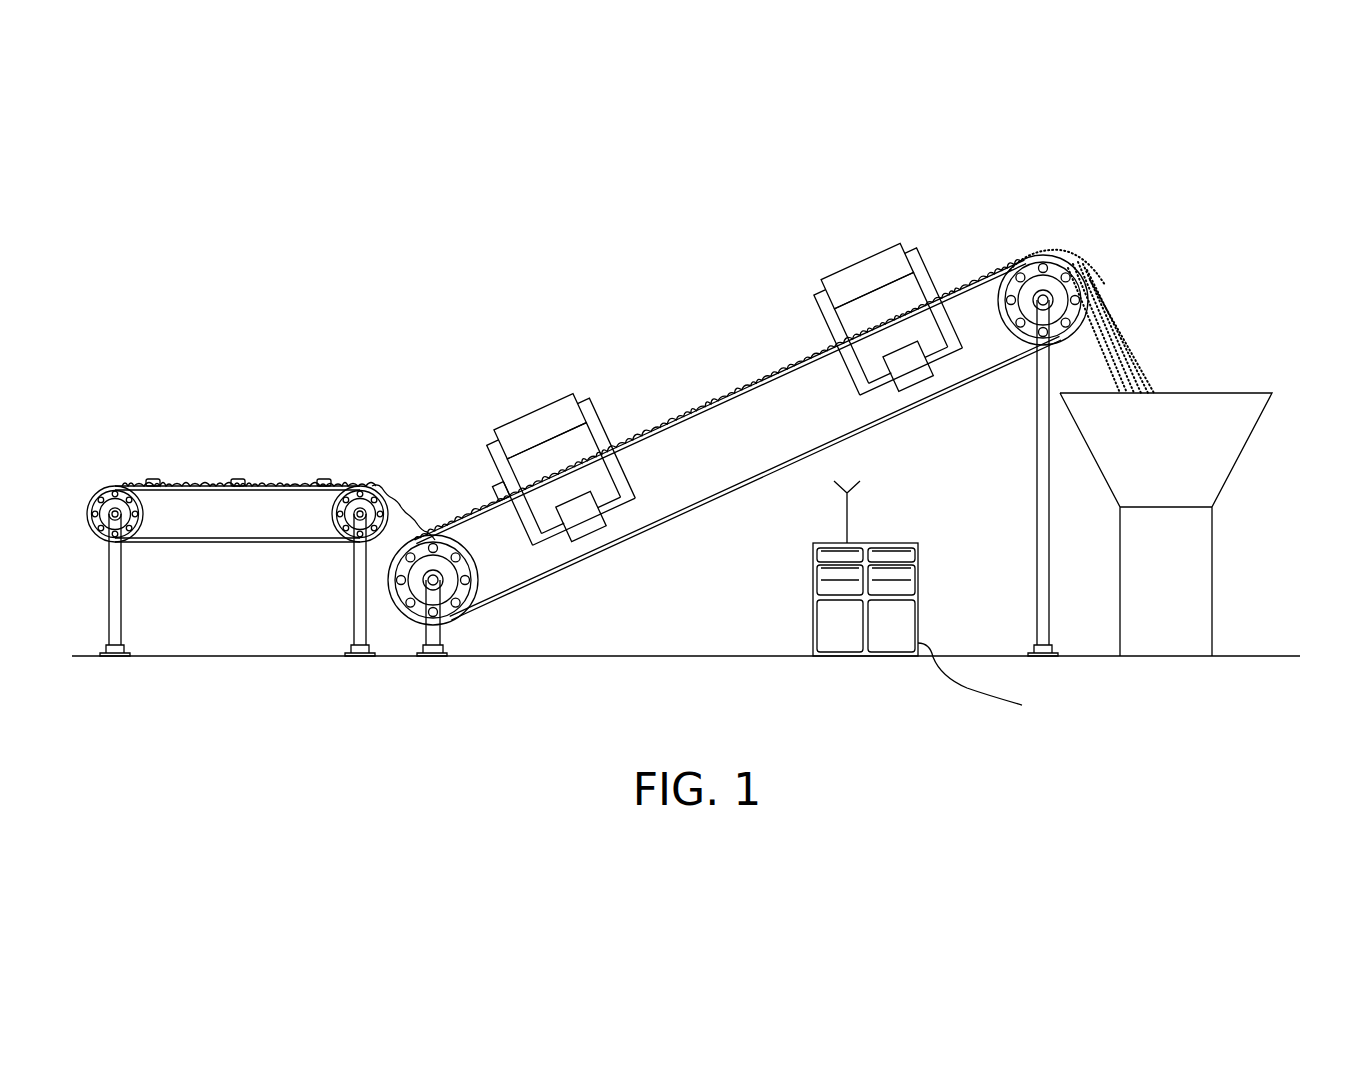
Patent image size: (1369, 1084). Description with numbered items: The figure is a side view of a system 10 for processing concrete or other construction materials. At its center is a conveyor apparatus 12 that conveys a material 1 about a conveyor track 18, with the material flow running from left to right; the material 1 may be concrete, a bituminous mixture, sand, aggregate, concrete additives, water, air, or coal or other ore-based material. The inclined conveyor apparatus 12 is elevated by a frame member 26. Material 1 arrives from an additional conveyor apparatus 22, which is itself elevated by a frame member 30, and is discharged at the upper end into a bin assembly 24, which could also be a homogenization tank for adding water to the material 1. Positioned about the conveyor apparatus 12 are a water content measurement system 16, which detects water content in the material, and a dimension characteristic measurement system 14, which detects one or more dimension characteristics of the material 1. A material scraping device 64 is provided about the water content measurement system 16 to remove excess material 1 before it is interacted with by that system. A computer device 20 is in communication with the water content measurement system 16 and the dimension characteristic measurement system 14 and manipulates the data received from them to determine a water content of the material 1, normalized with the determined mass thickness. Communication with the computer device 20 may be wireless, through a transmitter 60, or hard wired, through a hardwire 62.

The material 1 is at (287, 480).
The system 10 is at (612, 257).
The conveyor apparatus 12 is at (657, 383).
The dimension characteristic measurement system 14 is at (855, 250).
The water content measurement system 16 is at (535, 402).
The conveyor track 18 is at (750, 390).
The computer device 20 is at (823, 642).
The additional conveyor apparatus 22 is at (150, 470).
The bin assembly 24 is at (1227, 393).
The frame member 26 is at (440, 633).
The frame member 30 is at (123, 613).
The transmitter 60 is at (850, 513).
The hardwire 62 is at (963, 687).
The material scraping device 64 is at (492, 489).